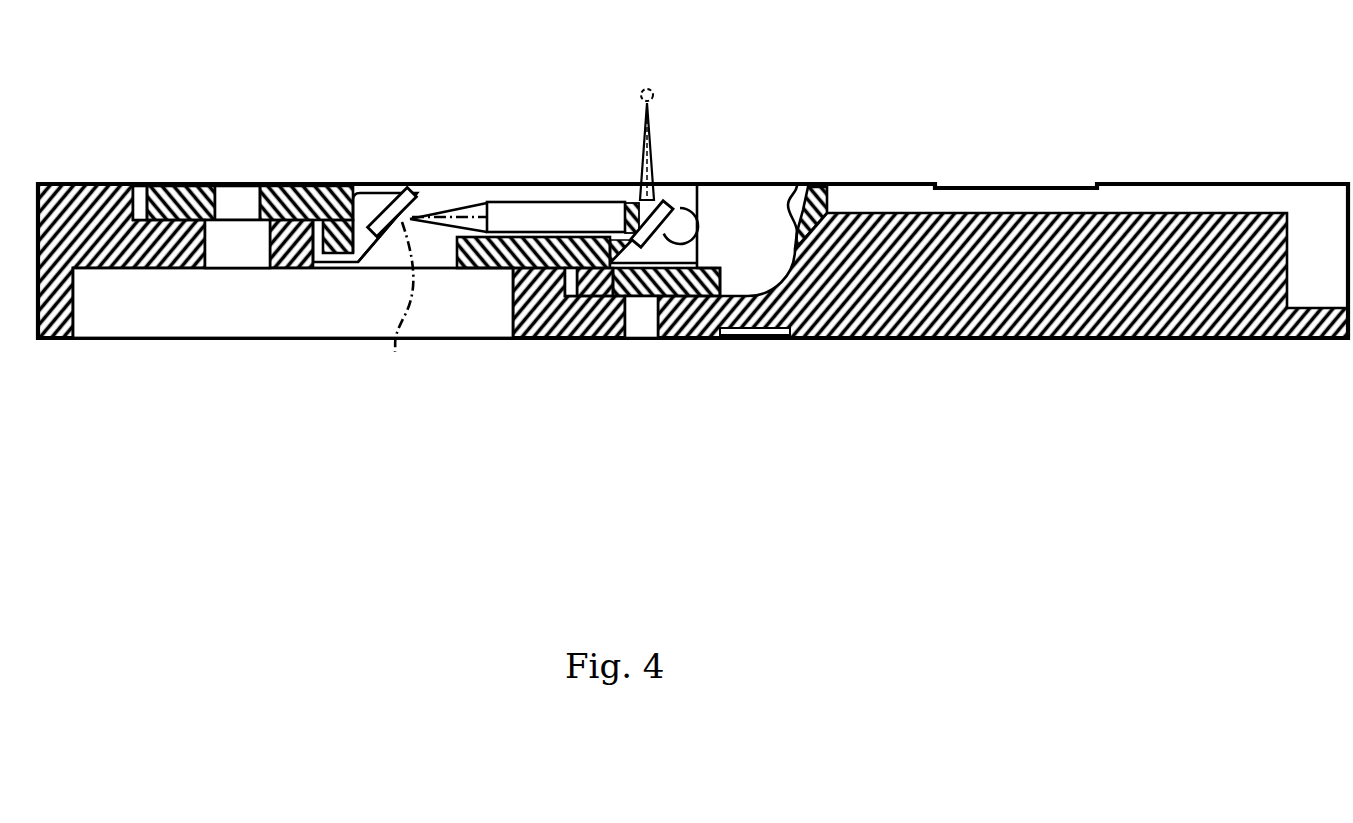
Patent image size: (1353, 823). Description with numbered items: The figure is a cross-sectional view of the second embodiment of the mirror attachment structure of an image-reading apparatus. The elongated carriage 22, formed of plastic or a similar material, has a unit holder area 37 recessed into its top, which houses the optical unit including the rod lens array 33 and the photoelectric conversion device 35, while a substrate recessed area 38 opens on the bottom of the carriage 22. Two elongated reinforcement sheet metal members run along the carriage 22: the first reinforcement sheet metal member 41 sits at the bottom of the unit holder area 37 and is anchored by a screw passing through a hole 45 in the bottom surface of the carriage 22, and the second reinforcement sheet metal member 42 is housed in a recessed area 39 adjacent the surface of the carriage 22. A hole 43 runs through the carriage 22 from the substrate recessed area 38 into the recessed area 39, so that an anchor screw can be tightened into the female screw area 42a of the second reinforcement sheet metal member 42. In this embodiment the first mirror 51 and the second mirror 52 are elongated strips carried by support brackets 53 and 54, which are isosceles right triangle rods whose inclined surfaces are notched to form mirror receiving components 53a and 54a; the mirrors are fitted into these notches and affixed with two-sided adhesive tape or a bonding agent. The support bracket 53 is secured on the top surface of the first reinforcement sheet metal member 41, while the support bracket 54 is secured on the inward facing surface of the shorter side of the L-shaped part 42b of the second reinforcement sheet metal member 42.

The carriage 22 is at (1057, 338).
The rod lens array 33 is at (590, 200).
The photoelectric conversion device 35 is at (395, 352).
The unit holder area 37 is at (520, 185).
The substrate recessed area 38 is at (152, 325).
The recessed area 39 is at (138, 185).
The first reinforcement sheet metal member 41 is at (598, 325).
The second reinforcement sheet metal member 42 is at (180, 185).
The female screw area 42a is at (238, 185).
The L-shaped part 42b is at (332, 185).
The hole 43 is at (230, 255).
The hole 45 is at (655, 325).
The first mirror 51 is at (672, 195).
The second mirror 52 is at (435, 185).
The support bracket 53 is at (688, 195).
The mirror receiving component 53a is at (715, 200).
The support bracket 54 is at (372, 185).
The mirror receiving component 54a is at (385, 185).